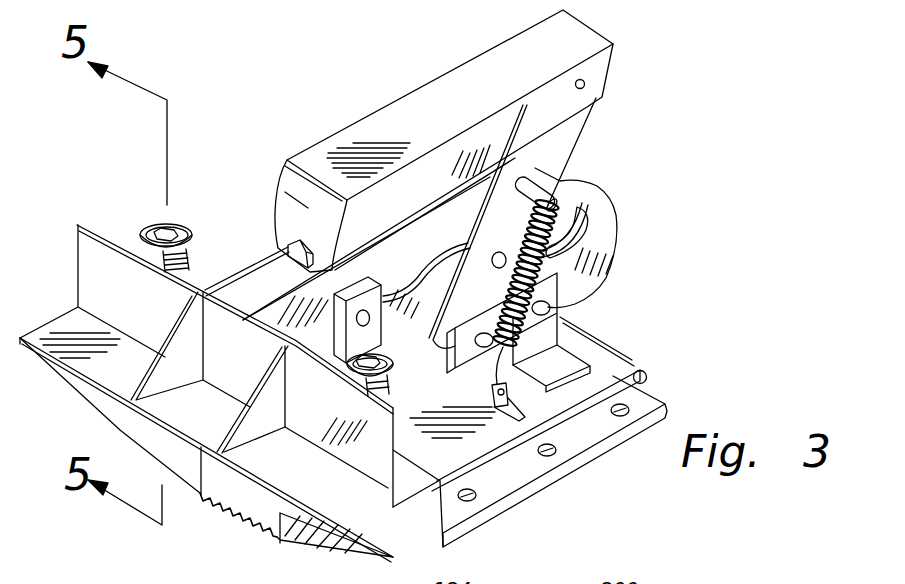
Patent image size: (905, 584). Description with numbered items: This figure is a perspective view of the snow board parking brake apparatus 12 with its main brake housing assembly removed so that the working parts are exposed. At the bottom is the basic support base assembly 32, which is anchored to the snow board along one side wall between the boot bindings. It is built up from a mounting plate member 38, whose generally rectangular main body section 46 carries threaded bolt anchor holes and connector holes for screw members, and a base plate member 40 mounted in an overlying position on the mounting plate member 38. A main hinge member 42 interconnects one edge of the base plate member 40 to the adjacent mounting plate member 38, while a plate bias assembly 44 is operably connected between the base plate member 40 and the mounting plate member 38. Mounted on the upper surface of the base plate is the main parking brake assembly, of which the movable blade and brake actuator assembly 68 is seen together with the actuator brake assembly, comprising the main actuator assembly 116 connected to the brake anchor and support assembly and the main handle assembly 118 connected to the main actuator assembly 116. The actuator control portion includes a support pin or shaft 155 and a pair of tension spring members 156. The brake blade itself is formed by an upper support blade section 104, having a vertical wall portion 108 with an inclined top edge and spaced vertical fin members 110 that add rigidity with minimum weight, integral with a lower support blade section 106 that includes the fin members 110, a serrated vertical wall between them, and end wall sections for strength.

The snow board parking brake apparatus 12 is at (473, 105).
The main handle assembly 118 is at (367, 130).
The main actuator assembly 116 is at (568, 146).
The support pin or shaft 155 is at (587, 200).
The tension spring members 156 is at (557, 190).
The movable blade and brake actuator assembly 68 is at (603, 231).
The base plate member 40 is at (611, 366).
The basic support base assembly 32 is at (632, 362).
The main hinge member 42 is at (639, 371).
The main body section 46 is at (641, 405).
The mounting plate member 38 is at (570, 480).
The plate bias assembly 44 is at (175, 245).
The vertical wall portion 108 is at (136, 265).
The upper support blade section 104 is at (90, 323).
The fin members 110 is at (262, 430).
The lower support blade section 106 is at (328, 535).